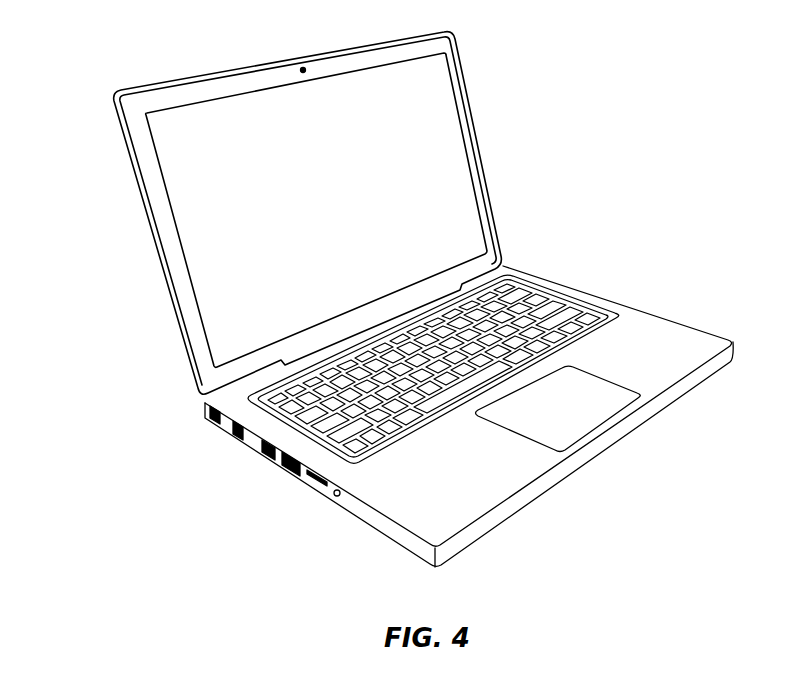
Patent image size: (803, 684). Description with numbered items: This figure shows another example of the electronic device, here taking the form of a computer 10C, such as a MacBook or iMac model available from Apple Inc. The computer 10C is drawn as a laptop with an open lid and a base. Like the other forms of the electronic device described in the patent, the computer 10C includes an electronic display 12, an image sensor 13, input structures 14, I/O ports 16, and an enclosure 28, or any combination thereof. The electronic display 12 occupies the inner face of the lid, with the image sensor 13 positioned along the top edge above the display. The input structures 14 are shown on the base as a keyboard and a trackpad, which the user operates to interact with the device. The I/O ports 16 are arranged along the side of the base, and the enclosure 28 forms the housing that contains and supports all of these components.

The computer 10C is at (390, 289).
The electronic display 12 is at (438, 116).
The image sensor 13 is at (303, 67).
The input structures 14 is at (586, 306).
The I/O ports 16 is at (257, 450).
The enclosure 28 is at (687, 326).